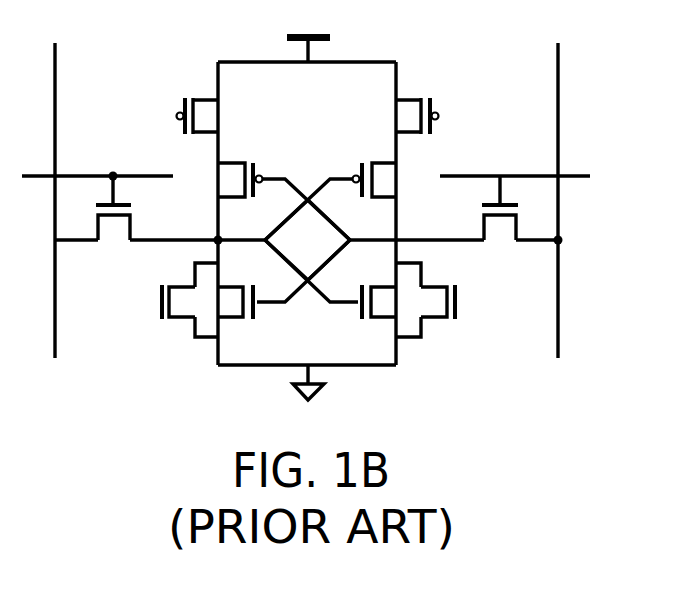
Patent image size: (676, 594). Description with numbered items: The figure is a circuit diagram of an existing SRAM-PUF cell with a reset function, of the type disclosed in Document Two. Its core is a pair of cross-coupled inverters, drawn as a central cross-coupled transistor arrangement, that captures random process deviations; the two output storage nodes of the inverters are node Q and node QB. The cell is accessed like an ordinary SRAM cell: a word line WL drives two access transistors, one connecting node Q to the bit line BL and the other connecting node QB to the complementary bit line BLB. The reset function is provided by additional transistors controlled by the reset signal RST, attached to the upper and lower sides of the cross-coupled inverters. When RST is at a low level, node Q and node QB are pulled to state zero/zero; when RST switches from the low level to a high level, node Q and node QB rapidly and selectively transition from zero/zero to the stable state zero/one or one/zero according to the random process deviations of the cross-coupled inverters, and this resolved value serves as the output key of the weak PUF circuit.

The reset signal RST is at (478, 302).
The word line WL is at (306, 188).
The bit line BL is at (69, 225).
The complementary bit line BLB is at (550, 225).
The node Q is at (197, 223).
The node QB is at (417, 221).